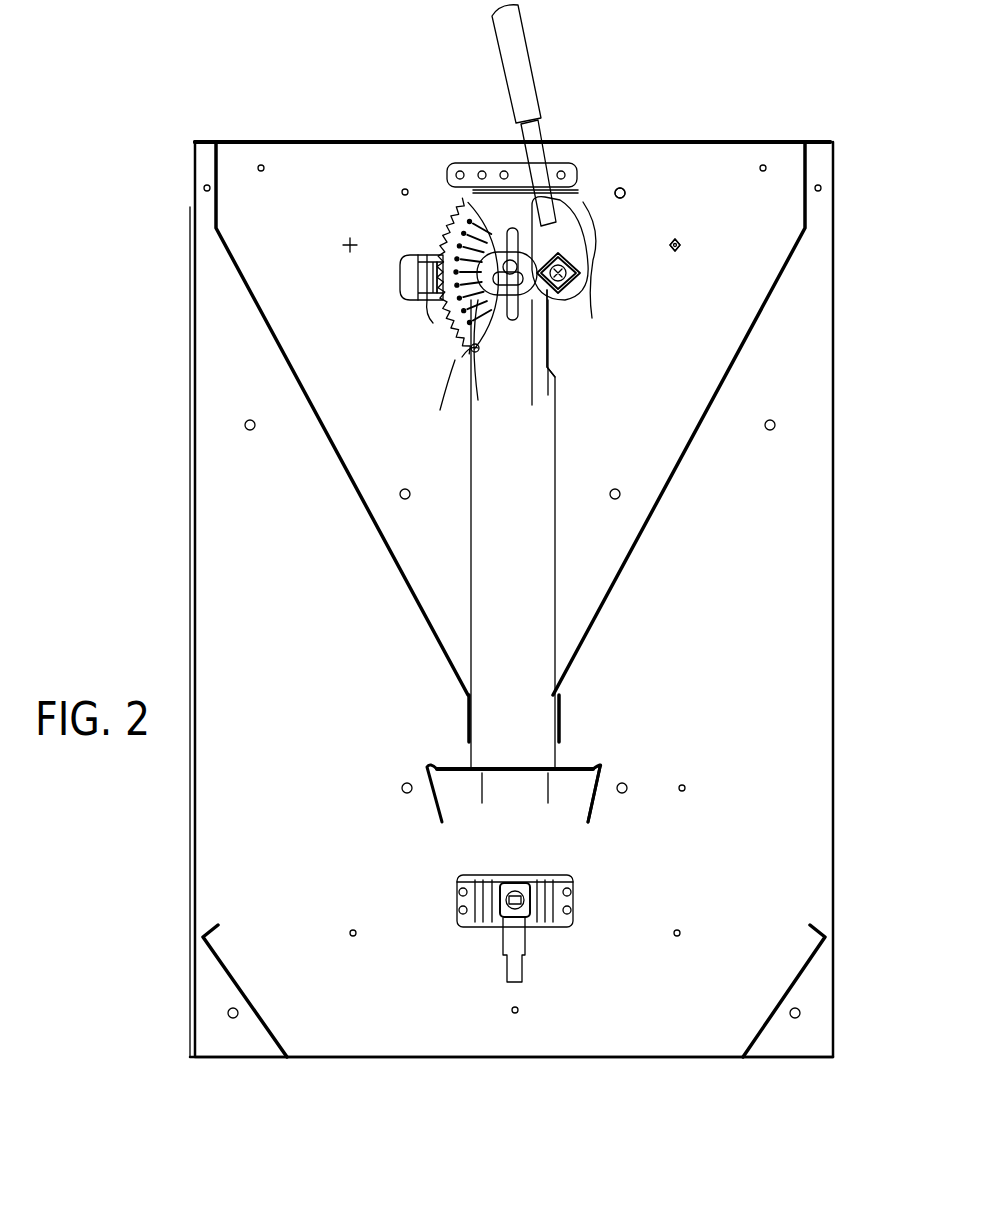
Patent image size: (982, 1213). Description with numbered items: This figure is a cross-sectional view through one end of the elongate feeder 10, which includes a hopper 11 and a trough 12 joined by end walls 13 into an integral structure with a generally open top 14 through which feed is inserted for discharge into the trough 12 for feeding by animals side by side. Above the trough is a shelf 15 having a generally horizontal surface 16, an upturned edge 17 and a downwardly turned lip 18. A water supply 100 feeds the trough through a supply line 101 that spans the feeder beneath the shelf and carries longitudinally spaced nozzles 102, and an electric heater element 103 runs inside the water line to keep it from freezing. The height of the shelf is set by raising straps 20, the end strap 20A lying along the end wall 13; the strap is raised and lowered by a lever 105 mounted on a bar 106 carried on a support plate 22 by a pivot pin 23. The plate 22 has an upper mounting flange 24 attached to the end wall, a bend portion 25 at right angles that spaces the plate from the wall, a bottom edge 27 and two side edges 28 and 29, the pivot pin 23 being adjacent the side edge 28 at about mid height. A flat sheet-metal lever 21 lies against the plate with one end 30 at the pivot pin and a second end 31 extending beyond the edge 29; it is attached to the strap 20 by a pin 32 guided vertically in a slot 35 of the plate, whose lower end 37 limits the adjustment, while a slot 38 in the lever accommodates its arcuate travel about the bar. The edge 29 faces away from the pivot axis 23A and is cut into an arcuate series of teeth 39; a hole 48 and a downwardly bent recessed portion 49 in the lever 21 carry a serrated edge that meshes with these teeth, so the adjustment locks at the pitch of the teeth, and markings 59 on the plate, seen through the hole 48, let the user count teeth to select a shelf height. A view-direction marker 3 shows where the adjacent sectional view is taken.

The section line for FIG. 3 is at (741, 98).
The elongate feeder 10 is at (278, 632).
The hopper 11 is at (363, 502).
The trough 12 is at (228, 968).
The end walls 13 is at (290, 855).
The open top 14 is at (352, 150).
The shelf 15 is at (637, 776).
The horizontal surface 16 is at (573, 774).
The upturned edge 17 is at (607, 763).
The downwardly turned lip 18 is at (598, 808).
The raising straps 20 is at (495, 513).
The end strap 20A is at (513, 657).
The lever 21 is at (396, 276).
The support plate 22 is at (593, 280).
The pivot pin 23 is at (592, 272).
The pivot axis 23A is at (560, 335).
The upper mounting flange 24 is at (580, 180).
The bend portion 25 is at (447, 172).
The bottom edge 27 is at (548, 400).
The side edge 28 is at (567, 216).
The side edge 29 is at (438, 238).
The end 30 is at (555, 226).
The second end 31 is at (413, 293).
The pin 32 is at (526, 331).
The slot 35 is at (515, 320).
The lower end 37 is at (492, 365).
The slot 38 is at (468, 362).
The teeth 39 is at (462, 357).
The hole 48 is at (433, 263).
The recessed portion 49 is at (437, 303).
The markings 59 is at (473, 357).
The water supply 100 is at (504, 919).
The supply line 101 is at (547, 873).
The nozzles 102 is at (515, 938).
The electric heater element 103 is at (493, 877).
The lever 105 is at (532, 135).
The bar 106 is at (648, 256).